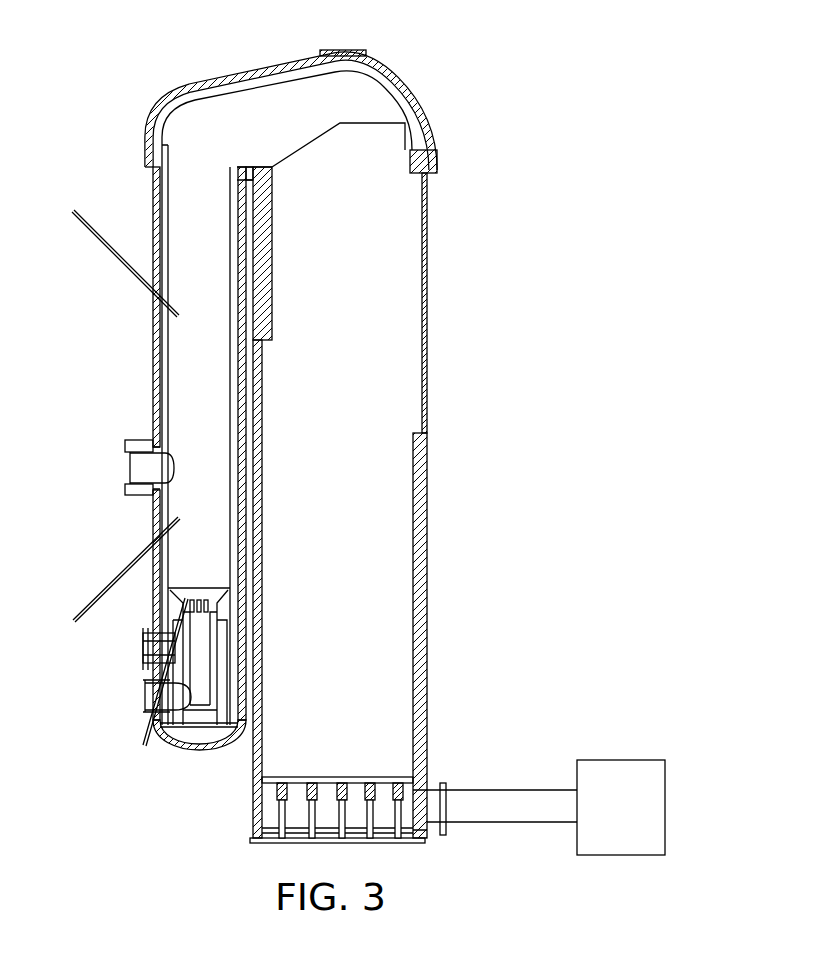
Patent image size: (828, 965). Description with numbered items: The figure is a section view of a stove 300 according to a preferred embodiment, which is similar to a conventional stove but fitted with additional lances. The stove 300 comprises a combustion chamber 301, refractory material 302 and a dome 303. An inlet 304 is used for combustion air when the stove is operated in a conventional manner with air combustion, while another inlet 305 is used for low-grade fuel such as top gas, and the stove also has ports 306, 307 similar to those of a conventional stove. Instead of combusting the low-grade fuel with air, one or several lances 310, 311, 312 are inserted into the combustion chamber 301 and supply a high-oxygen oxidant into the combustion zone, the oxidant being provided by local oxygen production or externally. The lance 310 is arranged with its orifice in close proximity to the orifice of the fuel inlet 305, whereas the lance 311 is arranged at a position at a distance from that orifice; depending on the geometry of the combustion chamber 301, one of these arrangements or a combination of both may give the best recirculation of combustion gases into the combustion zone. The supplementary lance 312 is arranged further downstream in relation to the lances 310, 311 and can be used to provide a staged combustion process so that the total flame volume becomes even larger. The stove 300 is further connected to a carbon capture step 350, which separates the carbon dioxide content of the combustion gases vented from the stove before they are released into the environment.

The stove 300 is at (130, 64).
The combustion chamber 301 is at (190, 198).
The refractory material 302 is at (393, 470).
The dome 303 is at (270, 105).
The inlet 304 is at (150, 650).
The inlet 305 is at (150, 697).
The port 306 is at (445, 795).
The port 307 is at (130, 466).
The lance 310 is at (145, 733).
The lance 311 is at (110, 575).
The supplementary lance 312 is at (105, 252).
The carbon capture step 350 is at (625, 760).